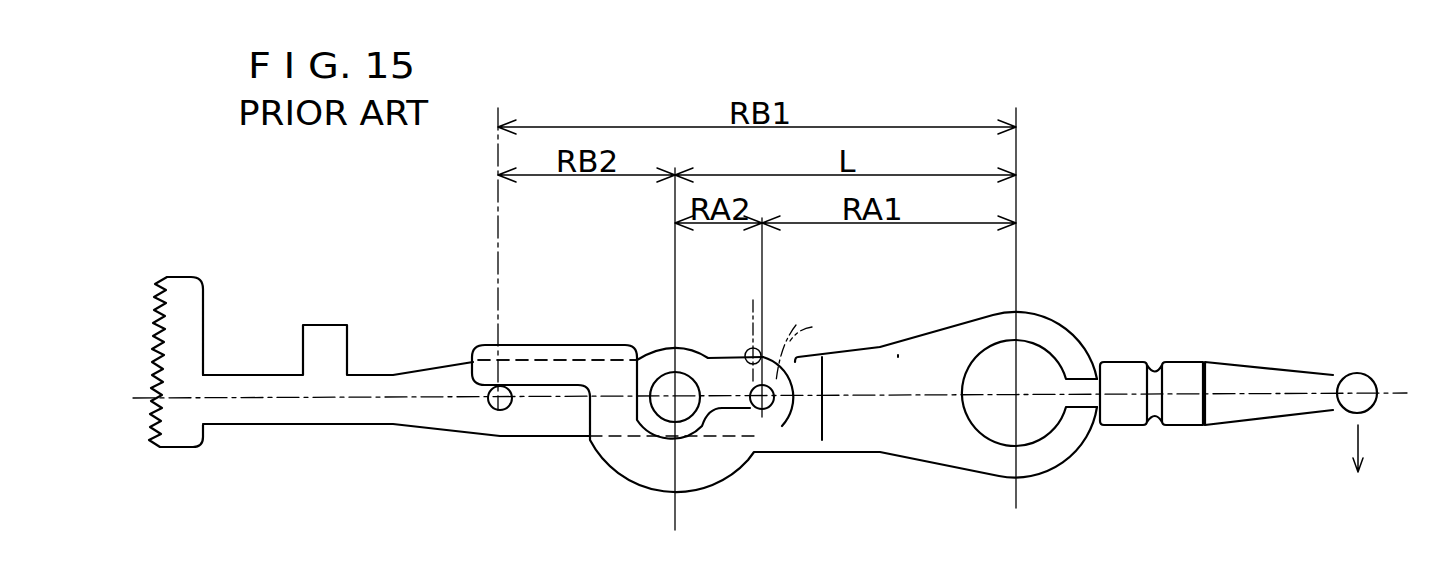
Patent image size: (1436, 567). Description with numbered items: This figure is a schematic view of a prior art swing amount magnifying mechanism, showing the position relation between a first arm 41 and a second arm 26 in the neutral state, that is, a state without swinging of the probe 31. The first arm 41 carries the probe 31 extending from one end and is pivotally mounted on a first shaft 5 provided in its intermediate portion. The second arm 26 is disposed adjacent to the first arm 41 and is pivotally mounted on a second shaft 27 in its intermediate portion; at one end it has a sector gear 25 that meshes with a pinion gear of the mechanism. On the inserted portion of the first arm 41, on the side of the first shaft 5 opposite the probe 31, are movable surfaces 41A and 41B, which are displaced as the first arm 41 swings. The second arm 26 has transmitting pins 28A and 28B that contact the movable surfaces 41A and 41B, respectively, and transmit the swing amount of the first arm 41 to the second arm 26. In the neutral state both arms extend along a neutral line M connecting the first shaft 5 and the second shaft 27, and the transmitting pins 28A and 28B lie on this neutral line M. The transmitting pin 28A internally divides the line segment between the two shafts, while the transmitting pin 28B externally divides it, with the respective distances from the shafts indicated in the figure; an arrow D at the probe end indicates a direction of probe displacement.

The sector gear 25 is at (186, 292).
The second arm 26 is at (441, 420).
The second shaft 27 is at (678, 395).
The transmitting pin 28A is at (755, 307).
The transmitting pin 28B is at (497, 411).
The first arm 41 is at (900, 357).
The movable surface 41A is at (796, 326).
The movable surface 41B is at (543, 382).
The first shaft 5 is at (1018, 388).
The probe 31 is at (1347, 370).
The neutral line M is at (1391, 390).
The direction D is at (1371, 461).